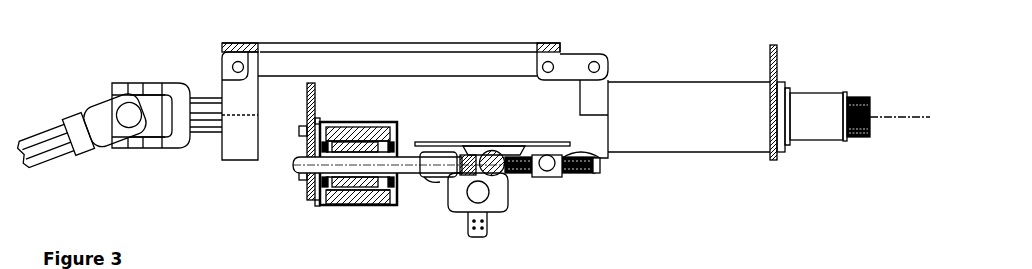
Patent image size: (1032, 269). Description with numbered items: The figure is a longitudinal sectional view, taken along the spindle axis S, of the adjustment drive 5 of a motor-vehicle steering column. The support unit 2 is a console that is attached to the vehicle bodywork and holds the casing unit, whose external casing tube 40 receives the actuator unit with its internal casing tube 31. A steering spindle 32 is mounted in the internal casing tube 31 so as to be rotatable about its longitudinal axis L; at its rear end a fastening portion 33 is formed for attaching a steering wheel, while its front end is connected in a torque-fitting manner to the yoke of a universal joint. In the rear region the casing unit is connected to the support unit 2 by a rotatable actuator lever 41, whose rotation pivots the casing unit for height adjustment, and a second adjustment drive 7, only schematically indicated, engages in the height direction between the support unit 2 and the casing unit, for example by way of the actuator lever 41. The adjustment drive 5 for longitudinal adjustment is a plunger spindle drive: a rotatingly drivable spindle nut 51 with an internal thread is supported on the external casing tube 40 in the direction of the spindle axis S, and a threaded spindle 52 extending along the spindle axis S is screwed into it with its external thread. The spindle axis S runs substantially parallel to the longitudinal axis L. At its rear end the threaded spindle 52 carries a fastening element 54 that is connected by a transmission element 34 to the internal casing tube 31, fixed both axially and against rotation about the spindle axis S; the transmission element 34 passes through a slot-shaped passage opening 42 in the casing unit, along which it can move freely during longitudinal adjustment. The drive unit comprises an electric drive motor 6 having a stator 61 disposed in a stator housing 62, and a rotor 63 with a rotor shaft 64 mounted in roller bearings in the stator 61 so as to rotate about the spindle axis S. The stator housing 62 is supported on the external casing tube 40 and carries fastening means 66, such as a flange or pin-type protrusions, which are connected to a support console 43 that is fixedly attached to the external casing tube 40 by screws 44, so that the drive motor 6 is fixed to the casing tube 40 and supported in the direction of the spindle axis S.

The support unit 2 is at (450, 44).
The adjustment drive 5 is at (314, 208).
The electric drive motor 6 is at (337, 203).
The second adjustment drive 7 is at (502, 194).
The internal casing tube 31 is at (678, 96).
The steering spindle 32 is at (818, 104).
The fastening portion 33 is at (852, 100).
The transmission element 34 is at (496, 150).
The external casing tube 40 is at (226, 150).
The actuator lever 41 is at (574, 60).
The passage opening 42 is at (563, 140).
The support console 43 is at (310, 82).
The screws 44 is at (302, 137).
The spindle nut 51 is at (378, 140).
The threaded spindle 52 is at (428, 178).
The fastening element 54 is at (468, 158).
The stator 61 is at (382, 202).
The stator housing 62 is at (390, 128).
The rotor 63 is at (367, 192).
The rotor shaft 64 is at (347, 185).
The fastening means 66 is at (321, 125).
The spindle axis S is at (284, 166).
The longitudinal axis L is at (918, 117).